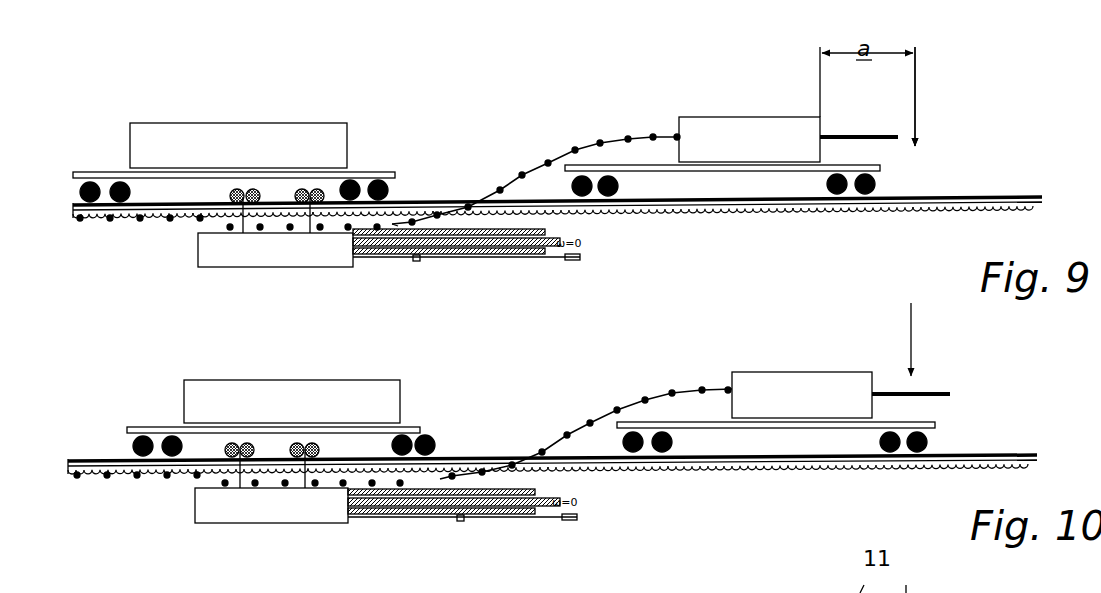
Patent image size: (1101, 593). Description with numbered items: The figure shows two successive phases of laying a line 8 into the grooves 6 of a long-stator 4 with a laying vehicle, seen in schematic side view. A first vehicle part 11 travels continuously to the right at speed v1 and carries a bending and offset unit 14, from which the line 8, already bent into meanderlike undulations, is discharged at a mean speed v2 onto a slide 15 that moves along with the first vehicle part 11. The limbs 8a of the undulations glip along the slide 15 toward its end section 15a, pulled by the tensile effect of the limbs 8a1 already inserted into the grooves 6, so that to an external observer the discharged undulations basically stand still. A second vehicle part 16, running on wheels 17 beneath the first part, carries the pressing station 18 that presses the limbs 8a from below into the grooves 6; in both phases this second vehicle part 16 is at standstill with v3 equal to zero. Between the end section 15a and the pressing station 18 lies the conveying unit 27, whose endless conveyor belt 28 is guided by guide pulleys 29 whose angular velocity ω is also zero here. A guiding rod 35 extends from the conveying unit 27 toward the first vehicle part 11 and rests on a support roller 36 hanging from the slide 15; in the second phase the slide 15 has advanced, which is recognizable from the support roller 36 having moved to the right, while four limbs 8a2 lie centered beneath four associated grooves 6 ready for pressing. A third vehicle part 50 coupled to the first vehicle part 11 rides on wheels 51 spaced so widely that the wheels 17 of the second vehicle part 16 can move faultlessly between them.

In FIG. 9, the long-stator 4 is at (687, 220).
In FIG. 10, the long-stator 4 is at (781, 474).
In FIG. 9, the grooves 6 is at (754, 214).
In FIG. 10, the grooves 6 is at (708, 470).
In FIG. 9, the line 8 is at (863, 132).
In FIG. 9, the limbs 8a is at (552, 167).
In FIG. 10, the limbs 8a is at (567, 435).
In FIG. 9, the limbs already inserted 8a1 is at (170, 223).
In FIG. 10, the limbs already inserted 8a1 is at (167, 479).
In FIG. 9, the limbs lying on the receiving plate 8a2 is at (260, 231).
In FIG. 10, the limbs lying on the receiving plate 8a2 is at (256, 487).
In FIG. 9, the first vehicle part 11 is at (753, 100).
In FIG. 10, the first vehicle part 11 is at (854, 364).
In FIG. 9, the bending and offset unit 14 is at (728, 137).
In FIG. 9, the slide 15 is at (590, 145).
In FIG. 10, the slide 15 is at (605, 420).
In FIG. 9, the end section of the slide 15a is at (400, 217).
In FIG. 9, the second vehicle part 16 is at (212, 272).
In FIG. 10, the second vehicle part 16 is at (190, 529).
In FIG. 9, the wheels 17 is at (253, 190).
In FIG. 10, the wheels 17 is at (247, 444).
In FIG. 9, the pressing station 18 is at (285, 257).
In FIG. 10, the pressing station 18 is at (268, 513).
In FIG. 9, the conveying unit 27 is at (488, 265).
In FIG. 10, the conveying unit 27 is at (506, 525).
In FIG. 10, the conveyor belt 28 is at (420, 517).
In FIG. 9, the guide pulleys 29 is at (535, 250).
In FIG. 9, the guiding rod 35 is at (563, 257).
In FIG. 10, the guiding rod 35 is at (563, 520).
In FIG. 9, the support roller 36 is at (417, 261).
In FIG. 10, the support roller 36 is at (460, 521).
In FIG. 9, the third vehicle part 50 is at (278, 140).
In FIG. 10, the third vehicle part 50 is at (333, 395).
In FIG. 9, the wheels 51 is at (113, 200).